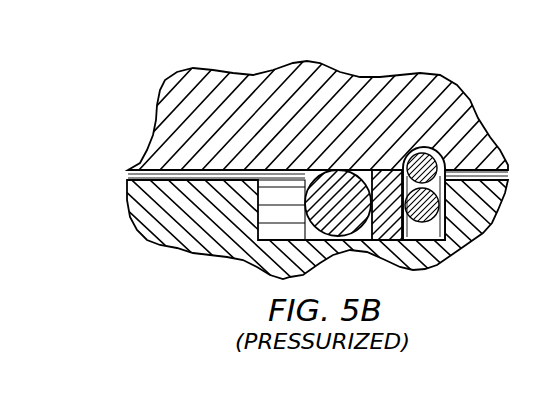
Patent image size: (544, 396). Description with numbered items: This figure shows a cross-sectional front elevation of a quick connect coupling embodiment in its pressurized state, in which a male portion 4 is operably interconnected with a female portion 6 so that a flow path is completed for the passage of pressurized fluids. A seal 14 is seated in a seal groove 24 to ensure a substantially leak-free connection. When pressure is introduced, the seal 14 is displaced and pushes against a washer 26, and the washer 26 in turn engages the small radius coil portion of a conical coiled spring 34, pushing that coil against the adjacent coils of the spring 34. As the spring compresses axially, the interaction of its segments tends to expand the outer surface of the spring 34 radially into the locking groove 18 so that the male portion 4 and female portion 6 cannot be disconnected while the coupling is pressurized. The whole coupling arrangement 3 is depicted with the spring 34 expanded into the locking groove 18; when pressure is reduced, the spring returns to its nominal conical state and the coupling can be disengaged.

The seal assembly 3 is at (145, 71).
The male portion 4 is at (448, 247).
The female portion 6 is at (367, 90).
The seal 14 is at (340, 172).
The locking groove 18 is at (416, 142).
The seal groove 24 is at (259, 172).
The washer 26 is at (421, 263).
The conical coiled spring 34 is at (497, 191).